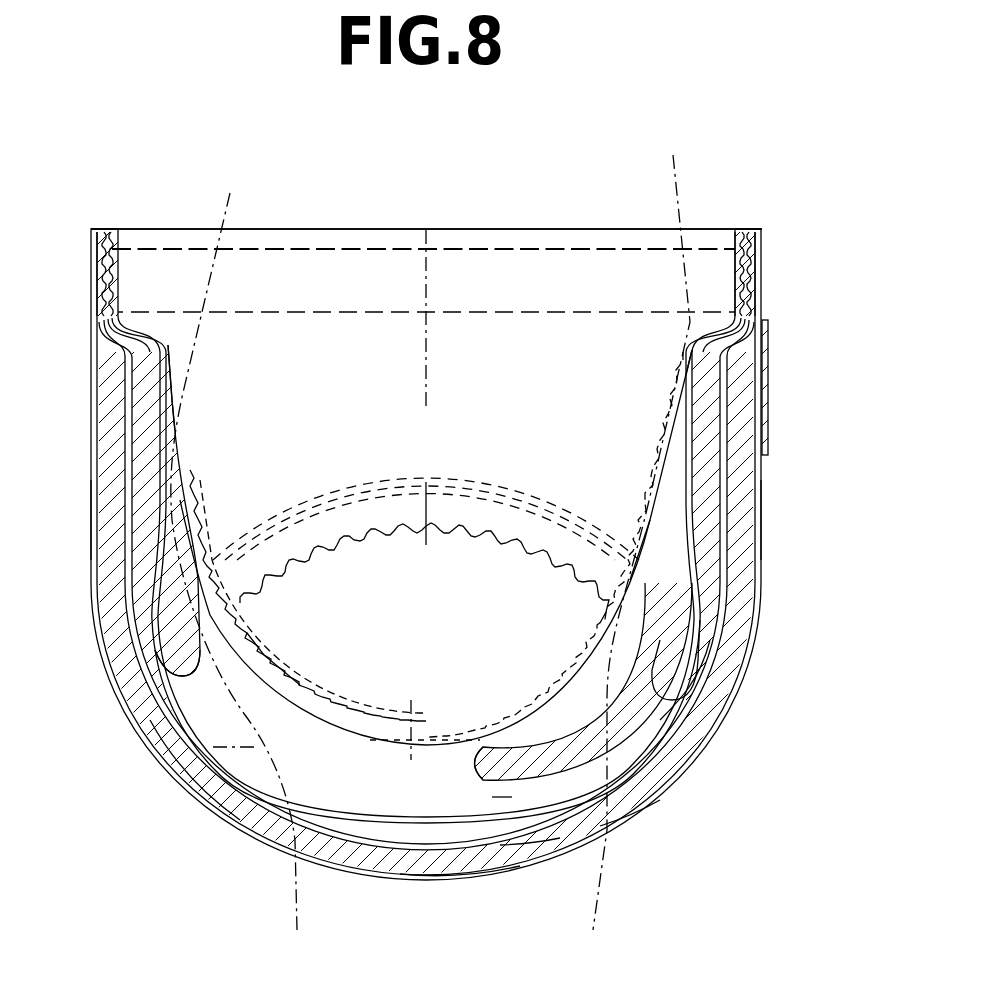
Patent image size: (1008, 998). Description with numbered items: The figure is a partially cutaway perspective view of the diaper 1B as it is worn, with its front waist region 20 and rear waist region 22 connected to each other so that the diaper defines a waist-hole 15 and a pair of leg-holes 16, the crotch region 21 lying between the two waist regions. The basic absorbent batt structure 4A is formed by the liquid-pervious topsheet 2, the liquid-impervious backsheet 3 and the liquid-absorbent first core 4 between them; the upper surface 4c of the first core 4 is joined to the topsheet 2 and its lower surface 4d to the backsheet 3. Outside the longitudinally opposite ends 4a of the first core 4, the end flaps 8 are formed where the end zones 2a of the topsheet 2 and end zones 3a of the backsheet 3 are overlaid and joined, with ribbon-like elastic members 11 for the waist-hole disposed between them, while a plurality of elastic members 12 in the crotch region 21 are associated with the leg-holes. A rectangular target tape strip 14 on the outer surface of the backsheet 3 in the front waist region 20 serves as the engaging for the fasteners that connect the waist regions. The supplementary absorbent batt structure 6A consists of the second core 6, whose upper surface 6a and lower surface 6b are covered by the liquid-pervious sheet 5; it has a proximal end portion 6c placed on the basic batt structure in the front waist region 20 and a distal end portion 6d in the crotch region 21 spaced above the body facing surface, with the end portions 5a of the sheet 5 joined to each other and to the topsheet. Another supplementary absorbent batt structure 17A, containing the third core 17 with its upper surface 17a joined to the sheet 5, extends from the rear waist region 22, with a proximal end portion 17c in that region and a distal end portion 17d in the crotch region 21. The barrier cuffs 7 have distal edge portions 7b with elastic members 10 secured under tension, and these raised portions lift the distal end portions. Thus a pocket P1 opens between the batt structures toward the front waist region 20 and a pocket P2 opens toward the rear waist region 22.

The diaper 1B is at (788, 174).
The topsheet 2 is at (388, 836).
The end zones of the topsheet 2a is at (100, 231).
The backsheet 3 is at (318, 855).
The end zones of the backsheet 3a is at (93, 241).
The first core 4 is at (360, 862).
The ends of the first core 4a is at (118, 348).
The basic absorbent batt structure 4A is at (203, 815).
The upper surface of the first core 4c is at (533, 822).
The lower surface of the first core 4d is at (629, 806).
The liquid-pervious sheet 5 is at (427, 655).
The end portions of the liquid-pervious sheet 5a is at (738, 256).
The second core 6 is at (548, 746).
The supplementary absorbent batt structure 6A is at (684, 524).
The upper surface of the second core 6a is at (673, 656).
The lower surface of the second core 6b is at (701, 678).
The proximal end portion 6c is at (688, 350).
The distal end portion 6d is at (490, 812).
The barrier cuffs 7 is at (420, 736).
The distal edge portions 7b is at (298, 704).
The end flaps 8 is at (568, 336).
The elastic members 10 is at (380, 716).
The elastic members 11 is at (92, 281).
The elastic members 12 is at (328, 540).
The target tape strip 14 is at (770, 390).
The waist-hole 15 is at (315, 256).
The leg-holes 16 is at (458, 545).
The third core 17 is at (173, 444).
The upper surface of the third core 17a is at (116, 253).
The supplementary absorbent batt structure 17A is at (180, 413).
The proximal end portion 17c is at (176, 361).
The distal end portion 17d is at (242, 661).
The front waist region 20 is at (765, 511).
The crotch region 21 is at (462, 880).
The rear waist region 22 is at (95, 515).
The pocket P1 is at (492, 798).
The pocket P2 is at (229, 726).